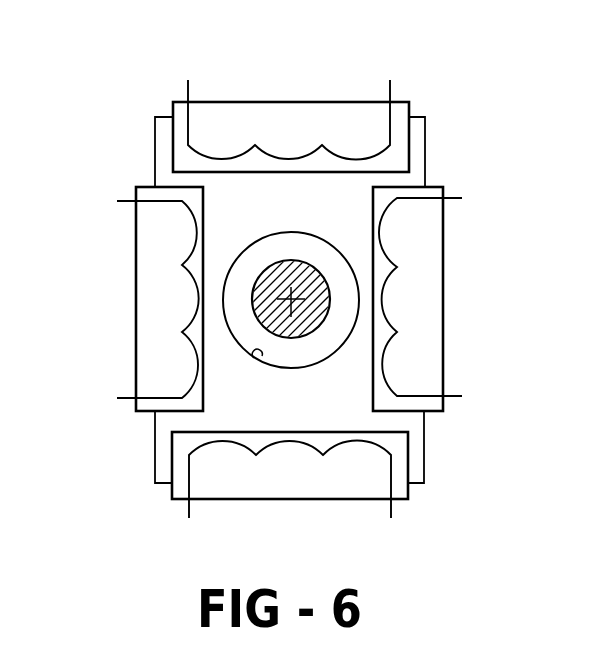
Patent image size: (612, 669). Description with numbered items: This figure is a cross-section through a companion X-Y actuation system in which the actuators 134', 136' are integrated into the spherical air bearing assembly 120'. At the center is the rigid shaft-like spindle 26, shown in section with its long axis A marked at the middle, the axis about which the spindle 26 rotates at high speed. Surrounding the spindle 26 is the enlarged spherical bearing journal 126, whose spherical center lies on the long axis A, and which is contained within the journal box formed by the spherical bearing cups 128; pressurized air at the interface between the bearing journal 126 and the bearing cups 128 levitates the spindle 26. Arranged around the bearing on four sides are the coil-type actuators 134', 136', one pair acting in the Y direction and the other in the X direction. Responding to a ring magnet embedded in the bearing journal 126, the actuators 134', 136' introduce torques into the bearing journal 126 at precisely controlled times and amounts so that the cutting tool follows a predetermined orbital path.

The spherical bearing assembly 120' is at (266, 315).
The actuator 134' is at (318, 287).
The actuator 136' is at (292, 298).
The bearing journal 126 is at (297, 247).
The spherical bearing cups 128 is at (254, 358).
The spindle 26 is at (272, 260).
The long axis A is at (296, 305).